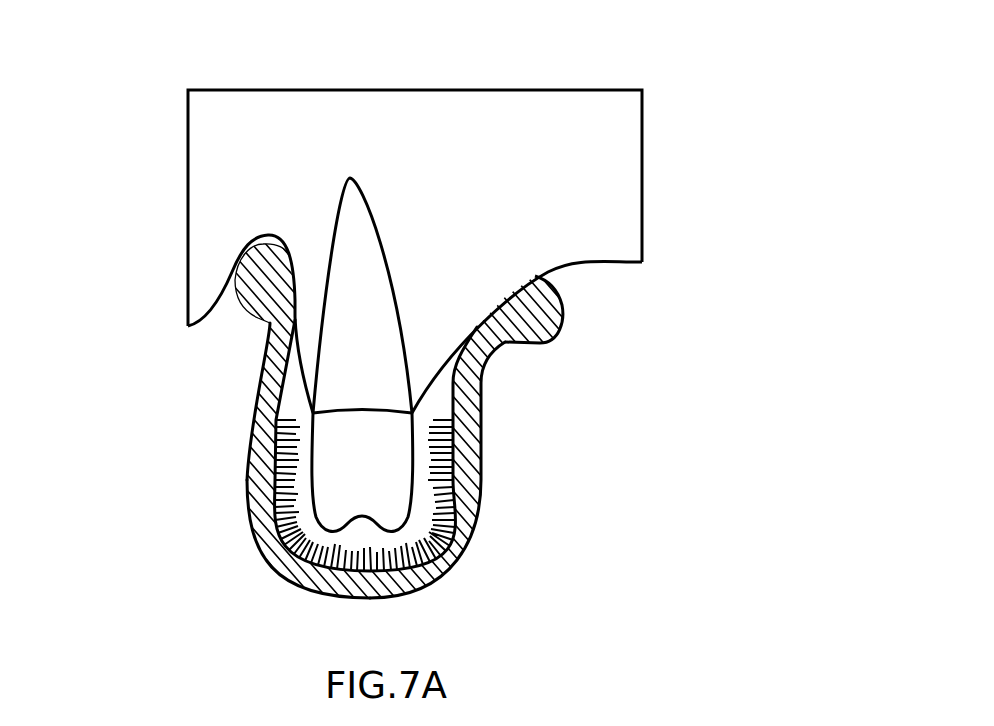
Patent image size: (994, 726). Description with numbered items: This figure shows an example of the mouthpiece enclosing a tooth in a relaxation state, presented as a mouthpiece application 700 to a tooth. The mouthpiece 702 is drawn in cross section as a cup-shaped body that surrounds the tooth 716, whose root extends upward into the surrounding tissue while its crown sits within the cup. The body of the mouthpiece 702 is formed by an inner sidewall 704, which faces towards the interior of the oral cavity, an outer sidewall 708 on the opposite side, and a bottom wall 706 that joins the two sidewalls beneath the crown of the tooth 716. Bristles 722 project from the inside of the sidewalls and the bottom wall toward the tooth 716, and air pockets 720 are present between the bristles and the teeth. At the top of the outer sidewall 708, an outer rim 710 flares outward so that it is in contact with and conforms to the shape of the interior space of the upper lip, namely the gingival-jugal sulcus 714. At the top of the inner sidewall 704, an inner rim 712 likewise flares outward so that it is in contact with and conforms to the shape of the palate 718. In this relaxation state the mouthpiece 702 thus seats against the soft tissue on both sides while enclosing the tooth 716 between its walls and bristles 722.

The mouthpiece application 700 is at (146, 121).
The mouthpiece 702 is at (483, 442).
The inner sidewall 704 is at (480, 513).
The bottom wall 706 is at (400, 596).
The outer sidewall 708 is at (248, 460).
The outer rim 710 is at (262, 297).
The inner rim 712 is at (533, 313).
The gingival-jugal sulcus 714 is at (263, 232).
The tooth 716 is at (364, 271).
The palate 718 is at (535, 273).
The air pockets 720 is at (362, 537).
The bristles 722 is at (440, 418).